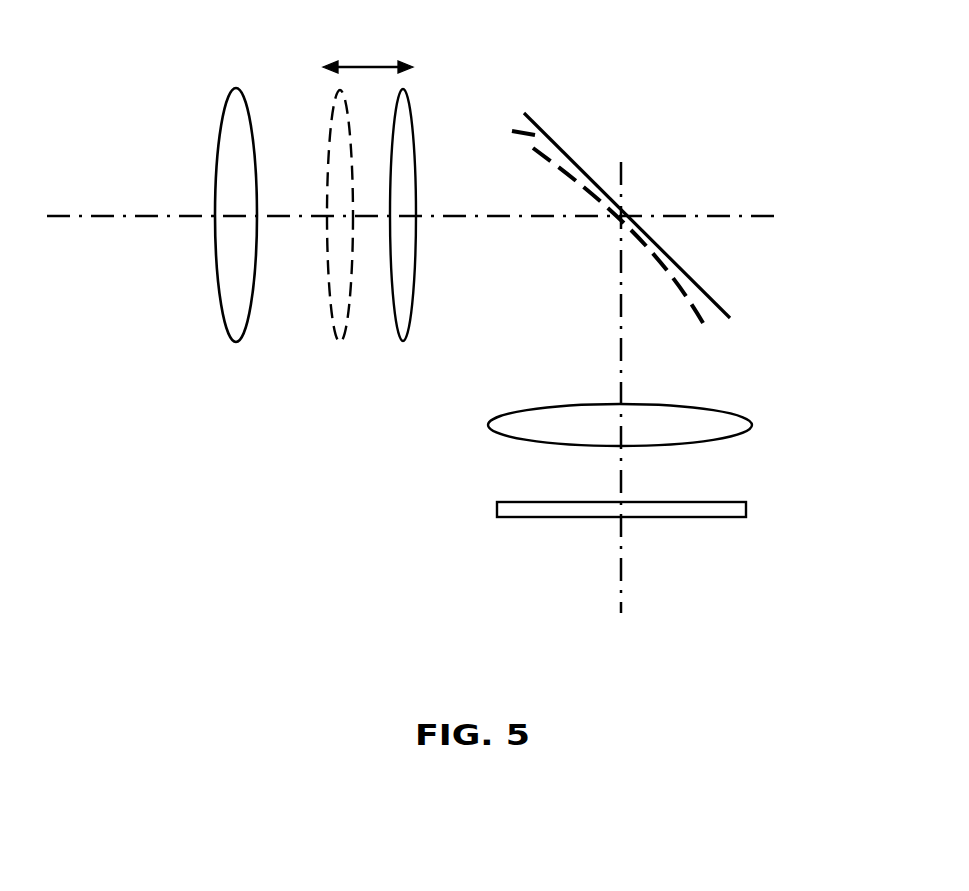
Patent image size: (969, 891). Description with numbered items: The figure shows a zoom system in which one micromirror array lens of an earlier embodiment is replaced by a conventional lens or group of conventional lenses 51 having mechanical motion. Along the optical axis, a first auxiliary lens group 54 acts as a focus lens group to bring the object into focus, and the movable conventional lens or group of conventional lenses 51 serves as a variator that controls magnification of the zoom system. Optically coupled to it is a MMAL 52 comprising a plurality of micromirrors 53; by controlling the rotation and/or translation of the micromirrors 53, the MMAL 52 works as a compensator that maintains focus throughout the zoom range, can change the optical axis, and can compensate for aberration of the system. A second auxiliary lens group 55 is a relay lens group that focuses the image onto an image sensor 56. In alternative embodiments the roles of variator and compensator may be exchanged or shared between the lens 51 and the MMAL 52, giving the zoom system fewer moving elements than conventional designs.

The conventional lens or group of conventional lenses having mechanical motion 51 is at (387, 342).
The MMAL 52 is at (569, 145).
The micromirrors 53 is at (712, 333).
The first auxiliary lens group 54 is at (217, 342).
The second auxiliary lens group 55 is at (483, 438).
The image sensor 56 is at (490, 525).